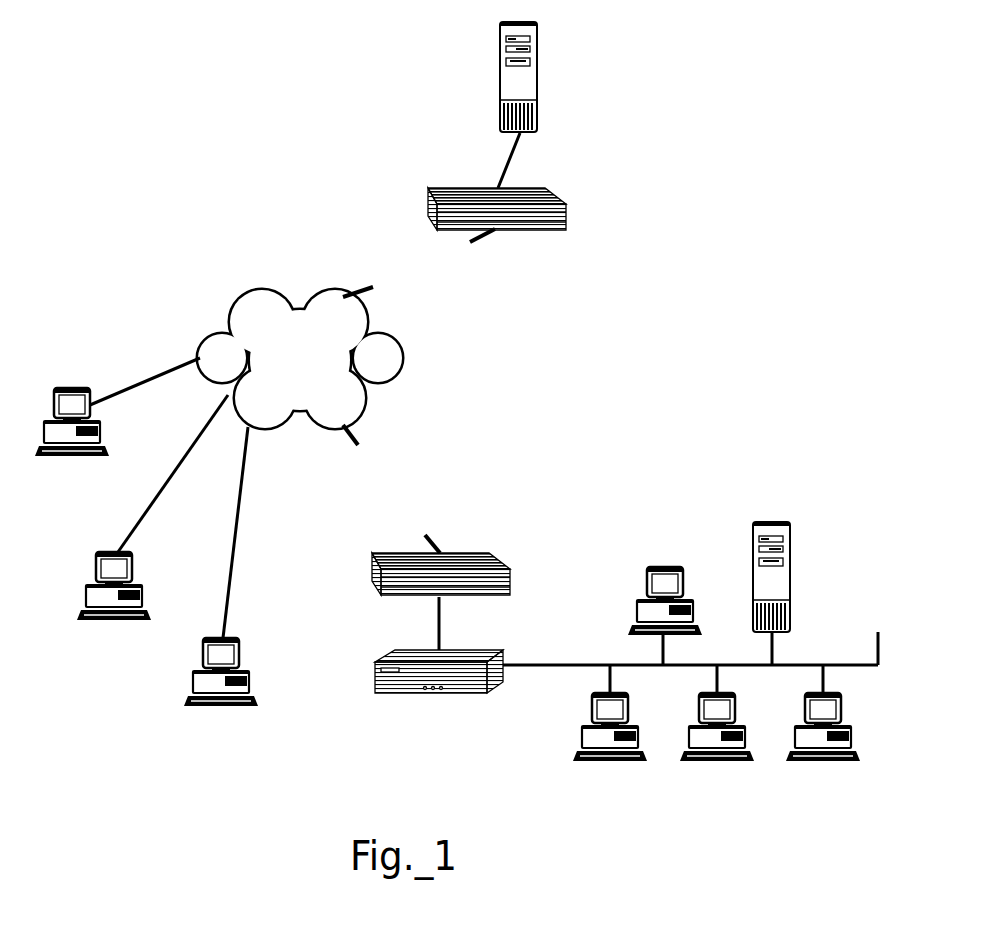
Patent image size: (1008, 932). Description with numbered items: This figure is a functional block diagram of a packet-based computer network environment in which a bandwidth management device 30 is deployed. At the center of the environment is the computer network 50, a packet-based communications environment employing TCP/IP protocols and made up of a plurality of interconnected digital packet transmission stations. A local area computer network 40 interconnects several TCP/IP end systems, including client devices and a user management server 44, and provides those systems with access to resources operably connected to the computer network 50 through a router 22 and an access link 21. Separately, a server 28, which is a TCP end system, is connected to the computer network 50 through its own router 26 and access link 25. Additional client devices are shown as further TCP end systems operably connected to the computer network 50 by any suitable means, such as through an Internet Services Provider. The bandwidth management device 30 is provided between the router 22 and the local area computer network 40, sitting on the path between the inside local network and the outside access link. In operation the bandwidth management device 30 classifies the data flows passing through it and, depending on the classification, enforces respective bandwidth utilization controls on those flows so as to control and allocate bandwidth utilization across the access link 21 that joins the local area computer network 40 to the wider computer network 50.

The access link 21 is at (428, 538).
The router 22 is at (473, 553).
The access link 25 is at (478, 235).
The router 26 is at (528, 230).
The server 28 is at (537, 78).
The bandwidth management device 30 is at (470, 695).
The local area computer network 40 is at (878, 632).
The user management server 44 is at (782, 522).
The computer network 50 is at (252, 292).